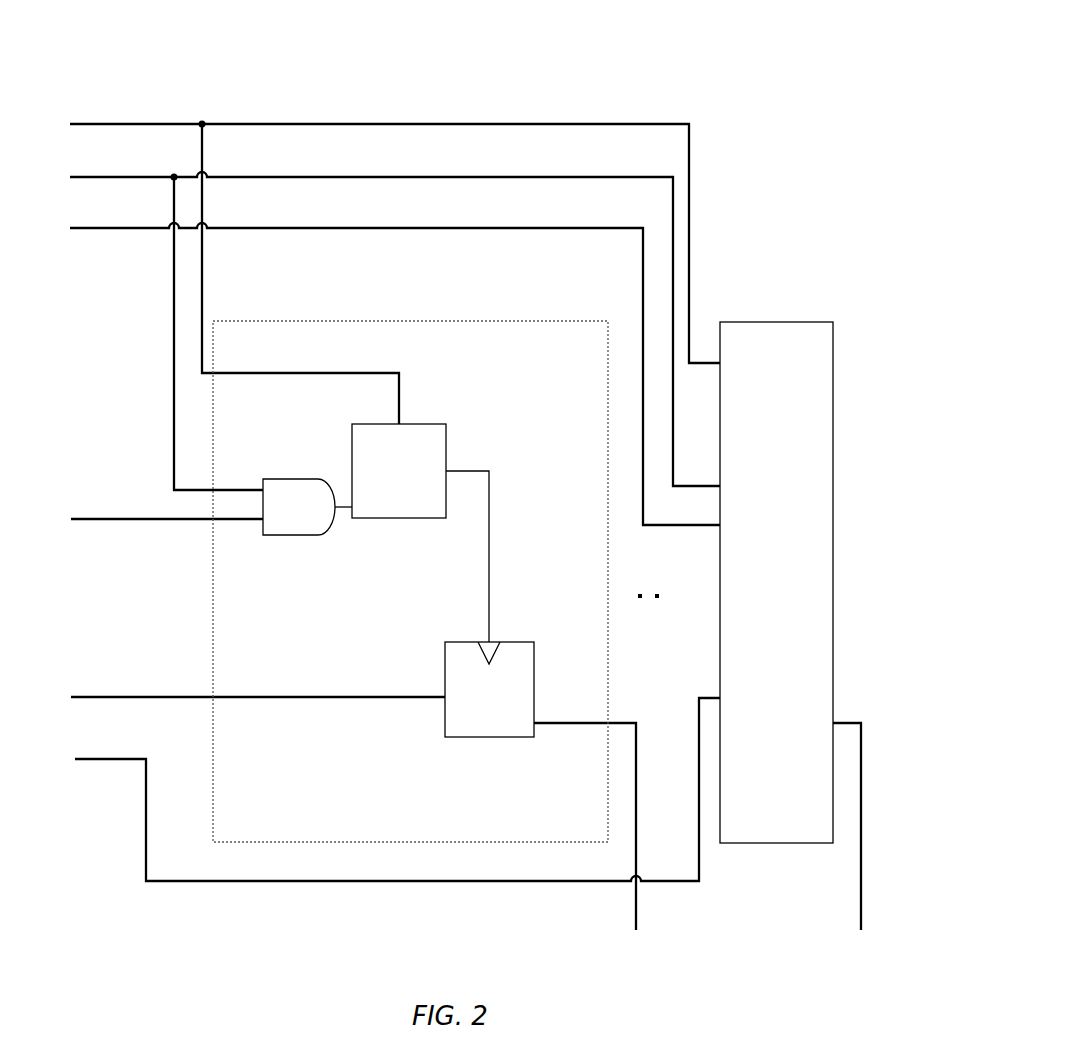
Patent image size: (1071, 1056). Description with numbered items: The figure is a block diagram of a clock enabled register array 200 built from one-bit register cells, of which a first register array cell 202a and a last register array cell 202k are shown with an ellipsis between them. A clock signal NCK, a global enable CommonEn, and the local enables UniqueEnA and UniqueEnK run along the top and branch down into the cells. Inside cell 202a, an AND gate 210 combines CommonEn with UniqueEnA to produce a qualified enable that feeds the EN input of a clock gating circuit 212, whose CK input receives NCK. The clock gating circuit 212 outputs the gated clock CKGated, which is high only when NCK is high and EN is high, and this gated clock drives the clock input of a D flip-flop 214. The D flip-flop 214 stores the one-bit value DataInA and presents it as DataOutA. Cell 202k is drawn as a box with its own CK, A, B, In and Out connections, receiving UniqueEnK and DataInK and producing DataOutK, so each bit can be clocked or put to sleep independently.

The clock enabled register array 200 is at (512, 72).
The register array cell 202a is at (333, 322).
The register array cell 202k is at (748, 322).
The AND gate 210 is at (273, 537).
The clock gating circuit 212 is at (422, 424).
The D flip-flop 214 is at (489, 737).